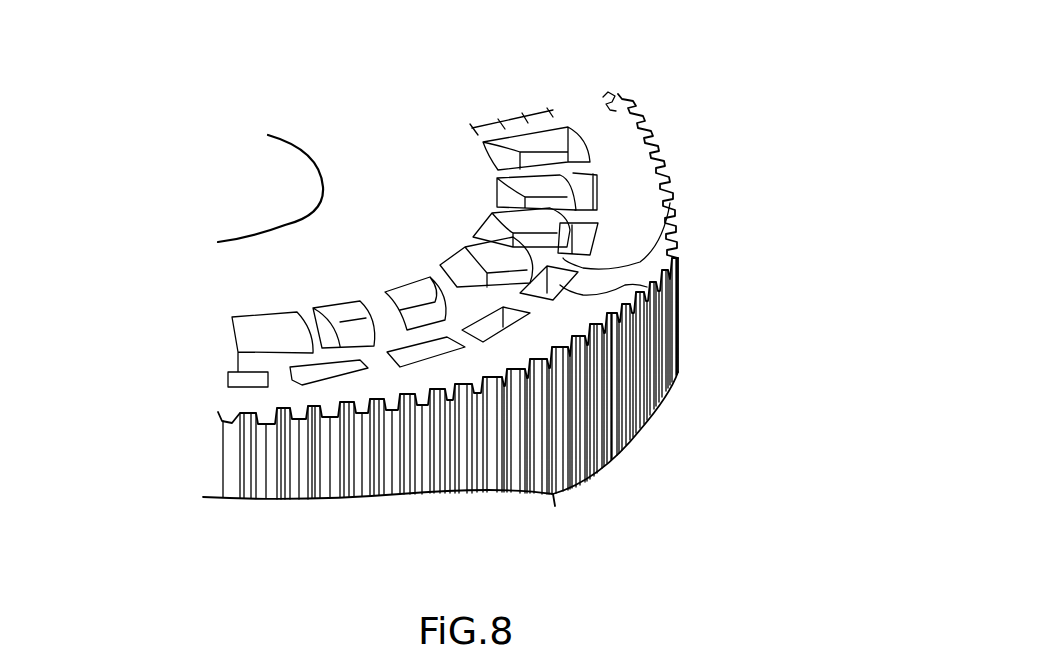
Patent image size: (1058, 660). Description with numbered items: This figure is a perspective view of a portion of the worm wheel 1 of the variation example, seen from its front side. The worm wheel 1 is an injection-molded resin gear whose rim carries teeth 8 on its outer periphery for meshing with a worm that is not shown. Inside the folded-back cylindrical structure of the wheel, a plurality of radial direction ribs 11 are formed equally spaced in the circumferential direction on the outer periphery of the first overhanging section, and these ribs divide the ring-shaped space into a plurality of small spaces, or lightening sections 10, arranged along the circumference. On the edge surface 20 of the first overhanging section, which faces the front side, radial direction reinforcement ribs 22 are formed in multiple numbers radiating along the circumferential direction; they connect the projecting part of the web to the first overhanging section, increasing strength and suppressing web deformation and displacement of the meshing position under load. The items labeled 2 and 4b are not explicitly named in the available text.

The worm wheel 1 is at (470, 274).
The rotor 2 is at (306, 210).
The insulator piece 4b is at (367, 273).
The teeth 8 is at (660, 150).
The small spaces (lightening sections) 10 is at (590, 197).
The radial direction ribs 11 is at (587, 167).
The edge surface 20 is at (498, 292).
The radial direction reinforcement ribs 22 is at (647, 287).